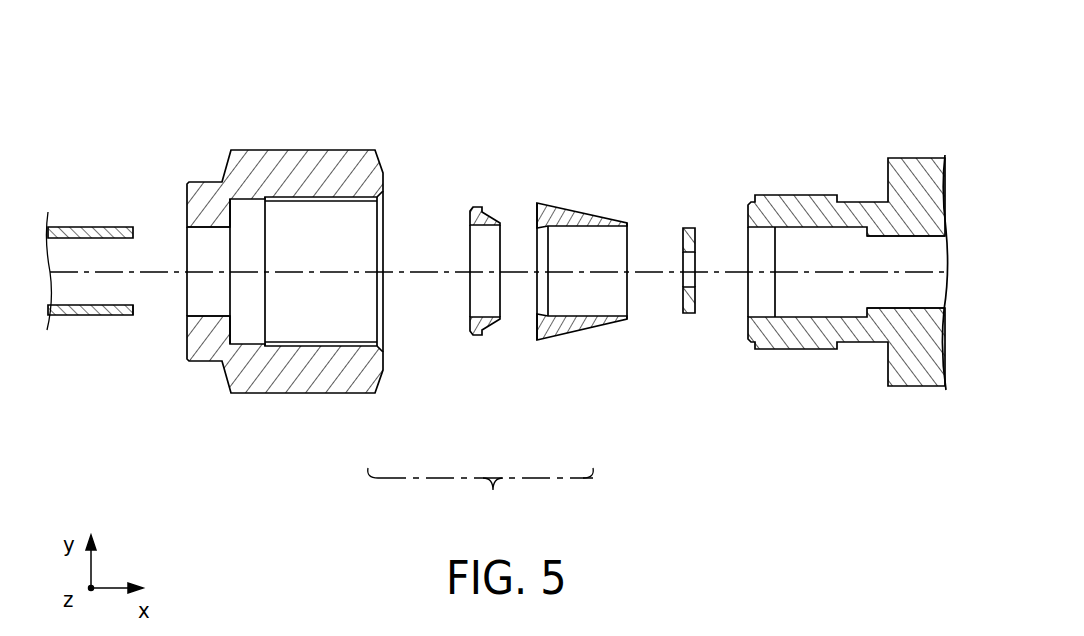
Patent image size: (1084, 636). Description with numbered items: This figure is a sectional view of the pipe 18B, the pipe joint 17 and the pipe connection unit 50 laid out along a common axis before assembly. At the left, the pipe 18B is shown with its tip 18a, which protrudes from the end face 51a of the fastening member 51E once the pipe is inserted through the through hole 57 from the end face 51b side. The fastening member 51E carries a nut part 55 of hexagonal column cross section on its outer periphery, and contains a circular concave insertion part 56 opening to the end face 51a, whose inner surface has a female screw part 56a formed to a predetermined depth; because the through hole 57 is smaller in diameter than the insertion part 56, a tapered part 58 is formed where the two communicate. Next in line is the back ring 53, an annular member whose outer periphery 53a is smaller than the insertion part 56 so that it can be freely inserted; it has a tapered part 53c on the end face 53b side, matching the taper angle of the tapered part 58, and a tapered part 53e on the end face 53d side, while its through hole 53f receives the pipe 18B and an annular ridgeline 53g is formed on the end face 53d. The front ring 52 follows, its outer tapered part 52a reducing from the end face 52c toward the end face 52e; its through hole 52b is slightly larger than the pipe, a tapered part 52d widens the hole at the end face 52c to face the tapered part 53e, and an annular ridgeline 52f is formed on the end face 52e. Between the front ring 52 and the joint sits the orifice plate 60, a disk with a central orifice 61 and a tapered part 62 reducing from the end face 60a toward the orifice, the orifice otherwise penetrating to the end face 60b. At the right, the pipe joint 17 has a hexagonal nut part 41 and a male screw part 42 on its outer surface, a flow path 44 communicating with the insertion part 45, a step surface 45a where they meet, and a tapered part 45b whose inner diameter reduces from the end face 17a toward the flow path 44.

The pipe joint 17 is at (800, 148).
The end face 17a is at (746, 338).
The pipe 18B is at (80, 236).
The tip 18a is at (133, 312).
The nut part 41 is at (917, 381).
The male screw part 42 is at (805, 344).
The flow path 44 is at (888, 257).
The insertion part 45 is at (787, 250).
The step surface 45a is at (867, 298).
The tapered part 45b is at (757, 217).
The pipe connection unit 50 is at (481, 498).
The fastening member 51E is at (293, 279).
The end face 51a is at (385, 183).
The end face 51b is at (189, 332).
The front ring 52 is at (596, 288).
The tapered part 52a is at (581, 209).
The through hole 52b is at (620, 305).
The end face 52c is at (537, 210).
The tapered part 52d is at (538, 320).
The end face 52e is at (627, 247).
The annular ridgeline 52f is at (627, 218).
The back ring 53 is at (473, 288).
The outer periphery 53a is at (476, 208).
The end face 53b is at (470, 308).
The tapered part 53c is at (472, 335).
The end face 53d is at (502, 318).
The tapered part 53e is at (480, 208).
The through hole 53f is at (478, 237).
The annular ridgeline 53g is at (500, 222).
The nut part 55 is at (307, 160).
The insertion part 56 is at (353, 317).
The female screw part 56a is at (380, 199).
The through hole 57 is at (197, 243).
The tapered part 58 is at (230, 318).
The orifice plate 60 is at (688, 314).
The end face 60a is at (683, 233).
The end face 60b is at (697, 300).
The orifice 61 is at (692, 258).
The tapered part 62 is at (683, 290).